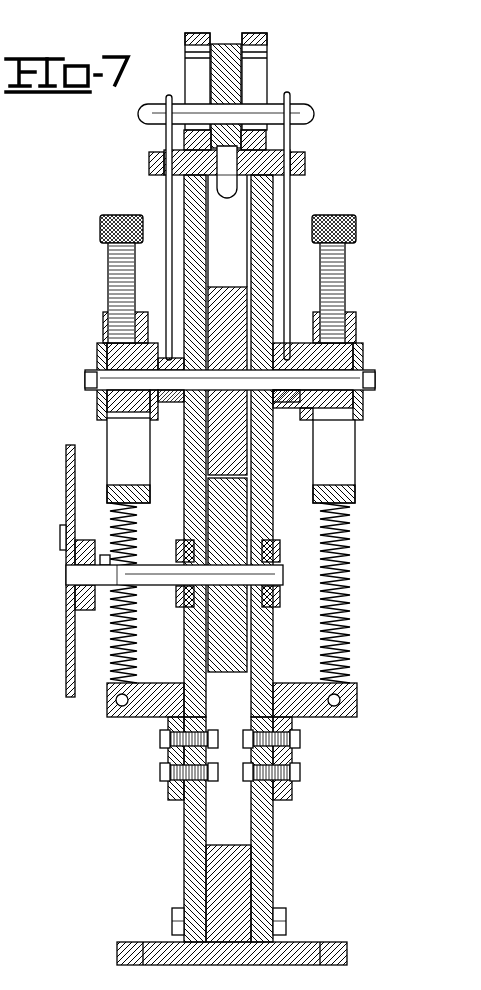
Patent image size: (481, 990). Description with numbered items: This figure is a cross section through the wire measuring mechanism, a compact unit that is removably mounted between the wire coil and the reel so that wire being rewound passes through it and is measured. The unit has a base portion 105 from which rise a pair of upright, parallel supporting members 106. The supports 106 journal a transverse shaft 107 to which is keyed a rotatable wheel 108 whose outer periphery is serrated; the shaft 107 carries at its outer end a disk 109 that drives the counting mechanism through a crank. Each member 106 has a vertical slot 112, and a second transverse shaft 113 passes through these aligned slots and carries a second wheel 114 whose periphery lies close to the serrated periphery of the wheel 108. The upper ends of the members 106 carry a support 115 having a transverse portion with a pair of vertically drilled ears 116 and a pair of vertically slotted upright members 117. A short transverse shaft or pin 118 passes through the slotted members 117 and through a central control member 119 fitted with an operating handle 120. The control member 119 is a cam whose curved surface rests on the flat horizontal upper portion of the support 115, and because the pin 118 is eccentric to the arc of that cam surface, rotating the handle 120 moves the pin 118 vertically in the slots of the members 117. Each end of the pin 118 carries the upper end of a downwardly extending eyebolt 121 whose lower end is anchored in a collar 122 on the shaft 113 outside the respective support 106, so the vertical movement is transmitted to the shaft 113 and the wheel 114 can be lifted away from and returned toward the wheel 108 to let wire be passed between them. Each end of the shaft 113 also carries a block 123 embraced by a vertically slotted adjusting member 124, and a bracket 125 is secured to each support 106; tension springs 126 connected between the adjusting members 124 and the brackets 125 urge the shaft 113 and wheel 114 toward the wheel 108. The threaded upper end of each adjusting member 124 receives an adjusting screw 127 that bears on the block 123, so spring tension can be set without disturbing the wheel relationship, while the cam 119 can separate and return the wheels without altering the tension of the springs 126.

The base portion 105 is at (305, 946).
The upright supporting member 106 is at (259, 812).
The transverse shaft 107 is at (276, 577).
The wheel 108 is at (237, 535).
The disk 109 is at (66, 682).
The vertical slot 112 is at (187, 437).
The transverse shaft 113 is at (355, 375).
The wheel 114 is at (228, 290).
The support 115 is at (239, 80).
The ear 116 is at (149, 164).
The upright member 117 is at (185, 42).
The transverse shaft or pin 118 is at (308, 111).
The control member 119 is at (226, 55).
The operating handle 120 is at (228, 197).
The eyebolt 121 is at (166, 204).
The collar 122 is at (170, 403).
The block 123 is at (120, 405).
The adjusting member 124 is at (142, 466).
The bracket 125 is at (150, 717).
The tension spring 126 is at (348, 572).
The adjusting screw 127 is at (110, 283).